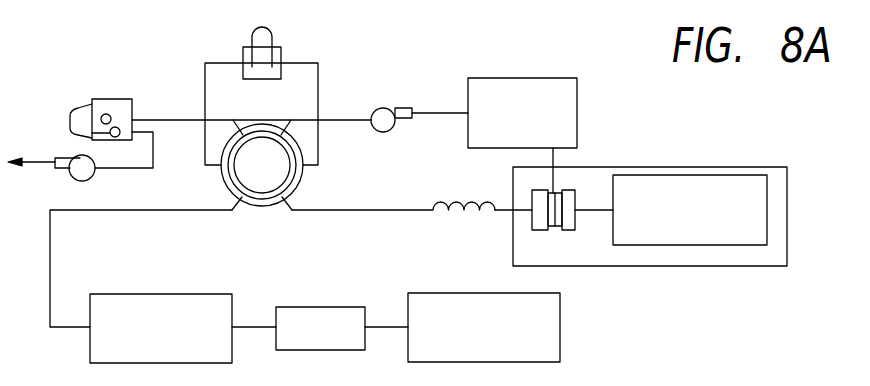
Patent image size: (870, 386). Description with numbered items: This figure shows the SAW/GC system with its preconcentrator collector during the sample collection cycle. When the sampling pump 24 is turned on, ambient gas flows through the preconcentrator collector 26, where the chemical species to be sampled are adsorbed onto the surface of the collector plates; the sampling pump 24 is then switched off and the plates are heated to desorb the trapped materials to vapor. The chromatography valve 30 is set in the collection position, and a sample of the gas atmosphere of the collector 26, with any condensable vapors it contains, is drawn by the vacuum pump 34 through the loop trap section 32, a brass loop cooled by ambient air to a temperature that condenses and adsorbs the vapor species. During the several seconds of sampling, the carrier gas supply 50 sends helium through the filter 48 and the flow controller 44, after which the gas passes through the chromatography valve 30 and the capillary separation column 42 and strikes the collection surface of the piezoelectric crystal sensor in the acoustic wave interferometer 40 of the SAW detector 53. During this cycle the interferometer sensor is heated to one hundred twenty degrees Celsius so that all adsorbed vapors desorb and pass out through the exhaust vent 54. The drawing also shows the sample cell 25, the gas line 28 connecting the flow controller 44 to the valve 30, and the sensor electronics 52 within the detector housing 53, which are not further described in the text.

The sampling pump 24 is at (92, 178).
The sample cell 25 is at (145, 120).
The preconcentrator collector 26 is at (102, 99).
The gas line 28 is at (47, 255).
The chromatography valve 30 is at (223, 187).
The loop trap section 32 is at (272, 30).
The vacuum pump 34 is at (383, 108).
The acoustic wave interferometer 40 is at (570, 190).
The capillary separation column 42 is at (463, 218).
The flow controller 44 is at (142, 294).
The filter 48 is at (325, 307).
The carrier gas supply 50 is at (560, 333).
The SAW sensor electronics 52 is at (680, 167).
The SAW detector 53 is at (767, 253).
The exhaust vent 54 is at (558, 78).